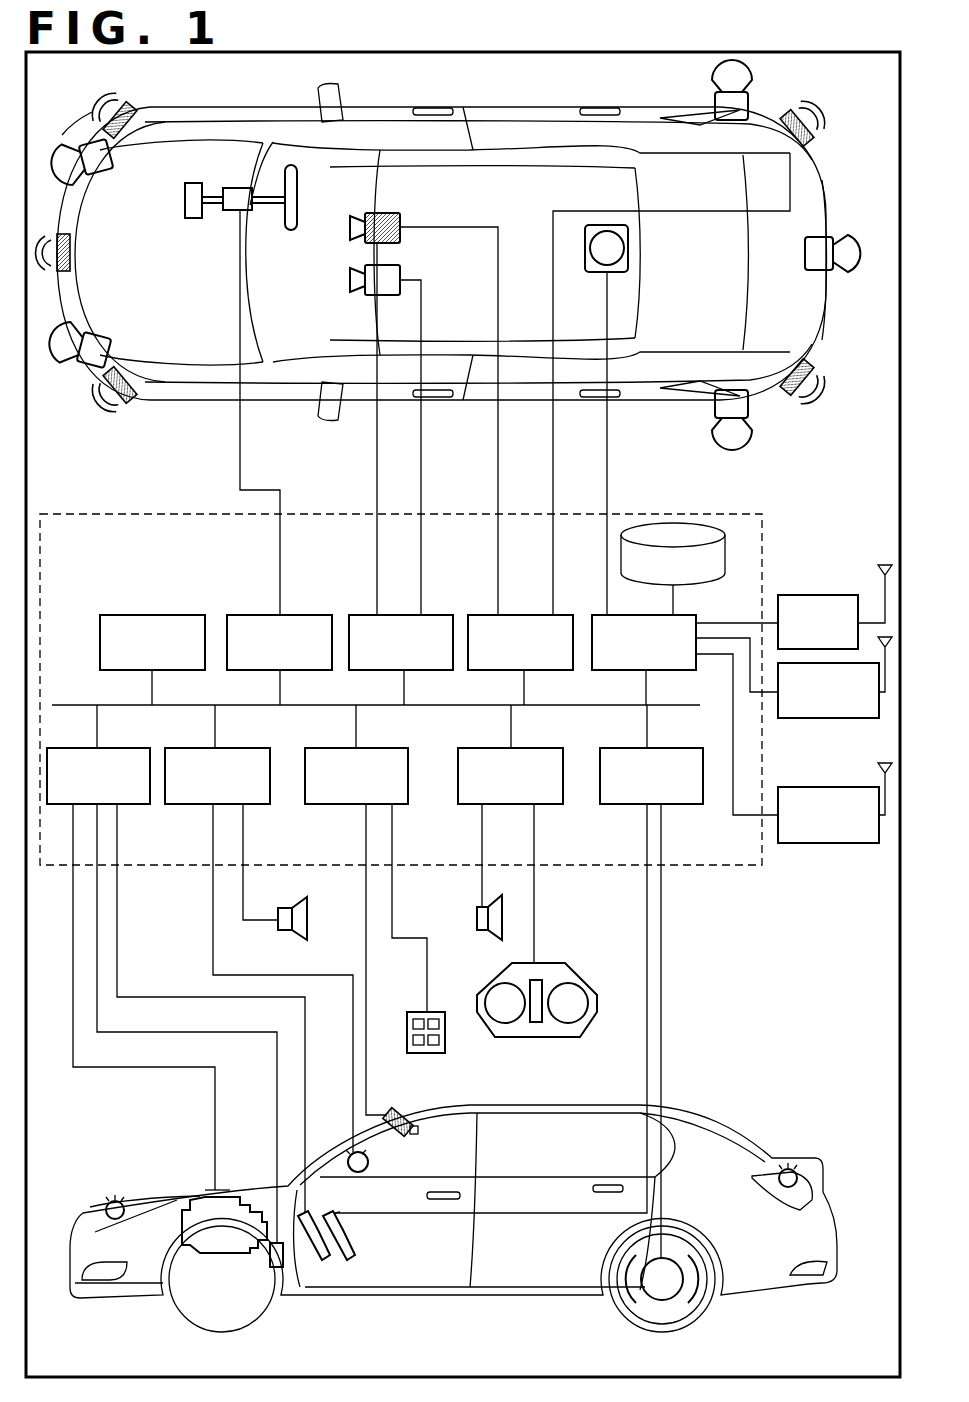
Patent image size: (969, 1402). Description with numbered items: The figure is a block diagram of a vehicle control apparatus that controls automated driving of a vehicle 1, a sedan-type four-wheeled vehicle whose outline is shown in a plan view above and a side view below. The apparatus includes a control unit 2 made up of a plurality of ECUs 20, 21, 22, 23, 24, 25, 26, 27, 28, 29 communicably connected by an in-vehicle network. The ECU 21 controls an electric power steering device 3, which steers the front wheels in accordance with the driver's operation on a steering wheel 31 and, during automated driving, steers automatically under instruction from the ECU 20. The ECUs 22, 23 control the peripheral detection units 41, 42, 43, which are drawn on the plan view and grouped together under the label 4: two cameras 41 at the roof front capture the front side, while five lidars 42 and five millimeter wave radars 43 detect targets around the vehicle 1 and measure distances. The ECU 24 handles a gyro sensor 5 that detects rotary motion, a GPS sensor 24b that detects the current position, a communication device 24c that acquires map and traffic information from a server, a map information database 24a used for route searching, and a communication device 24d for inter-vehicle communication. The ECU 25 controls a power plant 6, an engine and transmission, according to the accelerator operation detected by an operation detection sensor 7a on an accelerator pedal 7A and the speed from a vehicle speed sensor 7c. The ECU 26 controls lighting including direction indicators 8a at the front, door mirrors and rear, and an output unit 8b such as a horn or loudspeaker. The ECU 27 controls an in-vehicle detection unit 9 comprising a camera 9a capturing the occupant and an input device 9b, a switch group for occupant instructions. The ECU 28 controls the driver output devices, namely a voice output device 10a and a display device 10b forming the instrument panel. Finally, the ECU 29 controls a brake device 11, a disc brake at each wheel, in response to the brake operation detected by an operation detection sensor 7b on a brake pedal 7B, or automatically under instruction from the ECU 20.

The vehicle 1 is at (836, 162).
The control unit 2 is at (738, 868).
The electric power steering device 3 is at (193, 218).
The steering wheel 31 is at (291, 230).
The external sensor group 4 is at (76, 109).
The camera 41 is at (400, 235).
The lidar 42 is at (100, 178).
The millimeter wave radar 43 is at (128, 135).
The gyro sensor 5 is at (628, 250).
The power plant 6 is at (190, 1198).
The operation detection sensor 7a is at (307, 1207).
The accelerator pedal 7A is at (342, 1262).
The brake pedal 7B is at (357, 1243).
The operation detection sensor 7b is at (337, 1212).
The vehicle speed sensor 7c is at (277, 1268).
The direction indicator 8a is at (105, 1205).
The output unit 8b is at (278, 922).
The detection unit 9 is at (495, 1082).
The camera 9a is at (417, 1123).
The input device 9b is at (428, 1053).
The voice output device 10a is at (477, 915).
The display device 10b is at (494, 978).
The brake device 11 is at (666, 1300).
The ECU 20 is at (182, 615).
The ECU 21 is at (300, 615).
The ECU 22 is at (397, 615).
The ECU 23 is at (519, 615).
The ECU 24 is at (594, 615).
The map information database 24a is at (673, 520).
The GPS sensor 24b is at (833, 595).
The communication device 24c is at (828, 718).
The communication device 24d is at (828, 843).
The ECU 25 is at (141, 804).
The ECU 26 is at (184, 804).
The ECU 27 is at (318, 804).
The ECU 28 is at (560, 804).
The ECU 29 is at (690, 804).